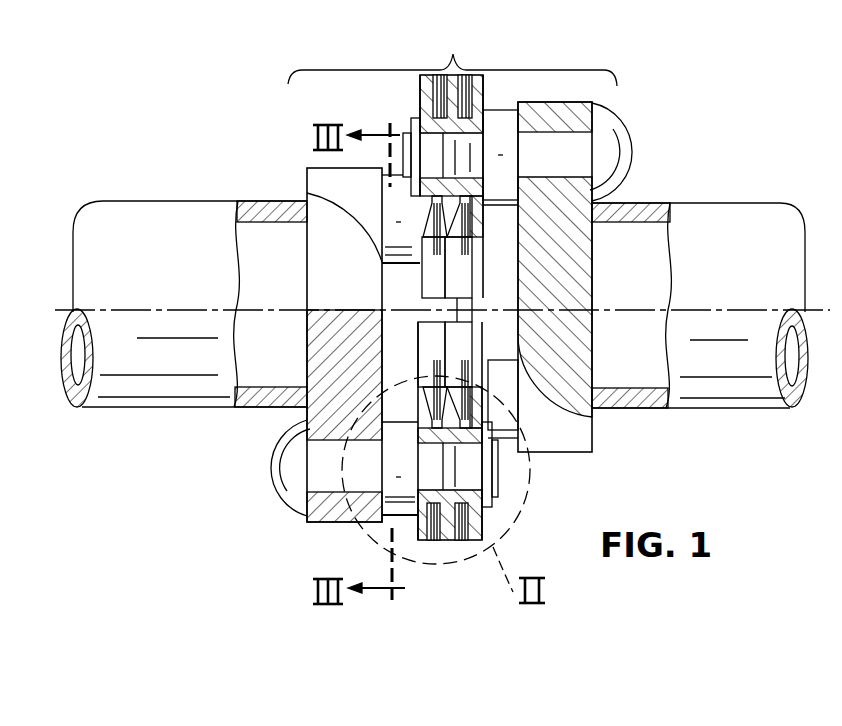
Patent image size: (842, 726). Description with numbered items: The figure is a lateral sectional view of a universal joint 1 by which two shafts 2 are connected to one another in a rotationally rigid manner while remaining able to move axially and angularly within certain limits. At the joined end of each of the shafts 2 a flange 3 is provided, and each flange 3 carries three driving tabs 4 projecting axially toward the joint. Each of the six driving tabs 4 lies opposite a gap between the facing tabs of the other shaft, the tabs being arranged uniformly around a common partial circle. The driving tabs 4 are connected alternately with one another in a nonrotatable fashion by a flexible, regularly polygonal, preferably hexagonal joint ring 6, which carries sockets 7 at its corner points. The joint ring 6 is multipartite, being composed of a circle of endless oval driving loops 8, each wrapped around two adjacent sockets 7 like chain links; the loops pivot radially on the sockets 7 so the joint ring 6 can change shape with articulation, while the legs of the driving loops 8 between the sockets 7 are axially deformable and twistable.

The universal joint 1 is at (452, 280).
The shafts 2 is at (178, 212).
The flange 3 is at (323, 182).
The driving tabs 4 is at (578, 152).
The joint ring 6 is at (458, 542).
The sockets 7 is at (430, 110).
The driving loops 8 is at (472, 245).